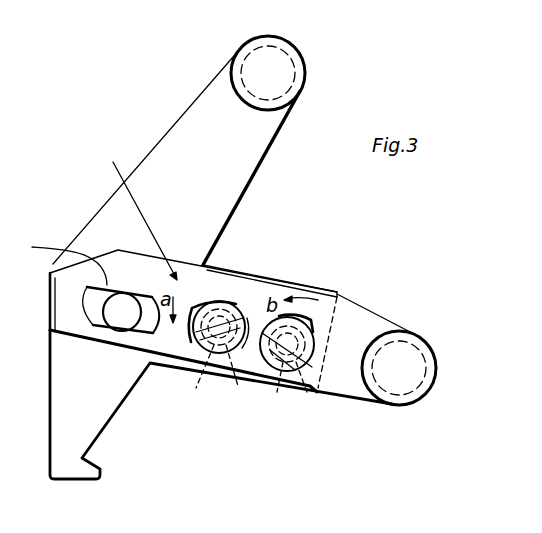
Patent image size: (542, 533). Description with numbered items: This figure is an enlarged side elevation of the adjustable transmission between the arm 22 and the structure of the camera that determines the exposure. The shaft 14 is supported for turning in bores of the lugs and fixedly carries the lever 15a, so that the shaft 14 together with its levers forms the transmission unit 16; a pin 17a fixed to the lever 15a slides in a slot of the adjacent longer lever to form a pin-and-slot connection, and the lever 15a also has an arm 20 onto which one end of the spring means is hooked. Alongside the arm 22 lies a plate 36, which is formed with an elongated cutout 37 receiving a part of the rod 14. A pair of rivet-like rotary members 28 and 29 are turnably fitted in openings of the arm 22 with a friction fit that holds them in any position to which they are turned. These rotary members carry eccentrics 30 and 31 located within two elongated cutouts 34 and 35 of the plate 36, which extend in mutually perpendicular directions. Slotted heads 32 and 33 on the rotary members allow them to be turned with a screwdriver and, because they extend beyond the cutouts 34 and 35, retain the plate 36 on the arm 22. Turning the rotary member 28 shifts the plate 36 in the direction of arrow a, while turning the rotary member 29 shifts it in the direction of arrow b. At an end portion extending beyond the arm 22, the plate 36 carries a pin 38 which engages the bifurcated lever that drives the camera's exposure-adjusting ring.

The shaft 14 is at (127, 320).
The lever 15a is at (197, 118).
The transmission unit 16 is at (90, 228).
The pin 17a is at (300, 63).
The arm 20 is at (65, 410).
The arm 22 is at (298, 284).
The rotary member 28 is at (238, 379).
The rotary member 29 is at (308, 393).
The eccentric 30 is at (200, 379).
The eccentric 31 is at (274, 388).
The slotted head 32 is at (236, 304).
The slotted head 33 is at (315, 324).
The elongated cutout 34 is at (193, 310).
The elongated cutout 35 is at (316, 327).
The plate 36 is at (137, 209).
The elongated cutout 37 is at (56, 261).
The pin 38 is at (430, 356).